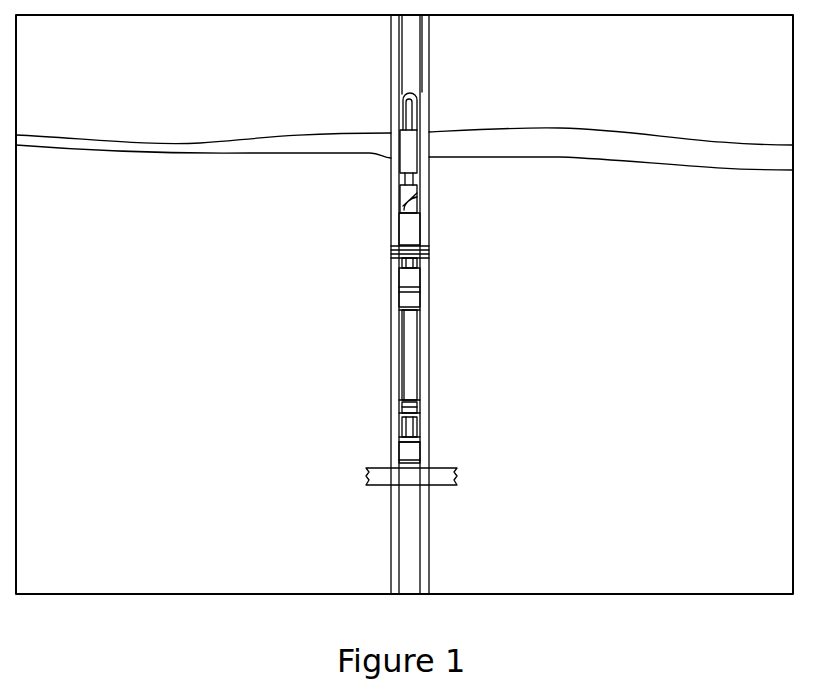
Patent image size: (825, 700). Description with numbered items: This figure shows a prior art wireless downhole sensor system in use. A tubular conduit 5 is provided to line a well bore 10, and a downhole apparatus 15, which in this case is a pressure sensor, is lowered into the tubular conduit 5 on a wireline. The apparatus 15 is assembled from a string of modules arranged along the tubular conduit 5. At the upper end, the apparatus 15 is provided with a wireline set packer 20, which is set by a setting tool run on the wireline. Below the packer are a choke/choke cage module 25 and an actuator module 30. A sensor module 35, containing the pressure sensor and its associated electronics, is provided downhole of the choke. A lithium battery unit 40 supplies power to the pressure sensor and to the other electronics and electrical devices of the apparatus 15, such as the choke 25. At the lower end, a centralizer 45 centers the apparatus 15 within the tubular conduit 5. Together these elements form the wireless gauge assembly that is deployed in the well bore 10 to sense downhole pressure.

The tubular conduit 5 is at (391, 84).
The well bore 10 is at (398, 508).
The downhole apparatus 15 is at (392, 258).
The wireline set packer 20 is at (429, 248).
The choke/choke cage module 25 is at (410, 322).
The actuator module 30 is at (410, 343).
The sensor module 35 is at (410, 385).
The lithium battery unit 40 is at (410, 413).
The centralizer 45 is at (410, 452).